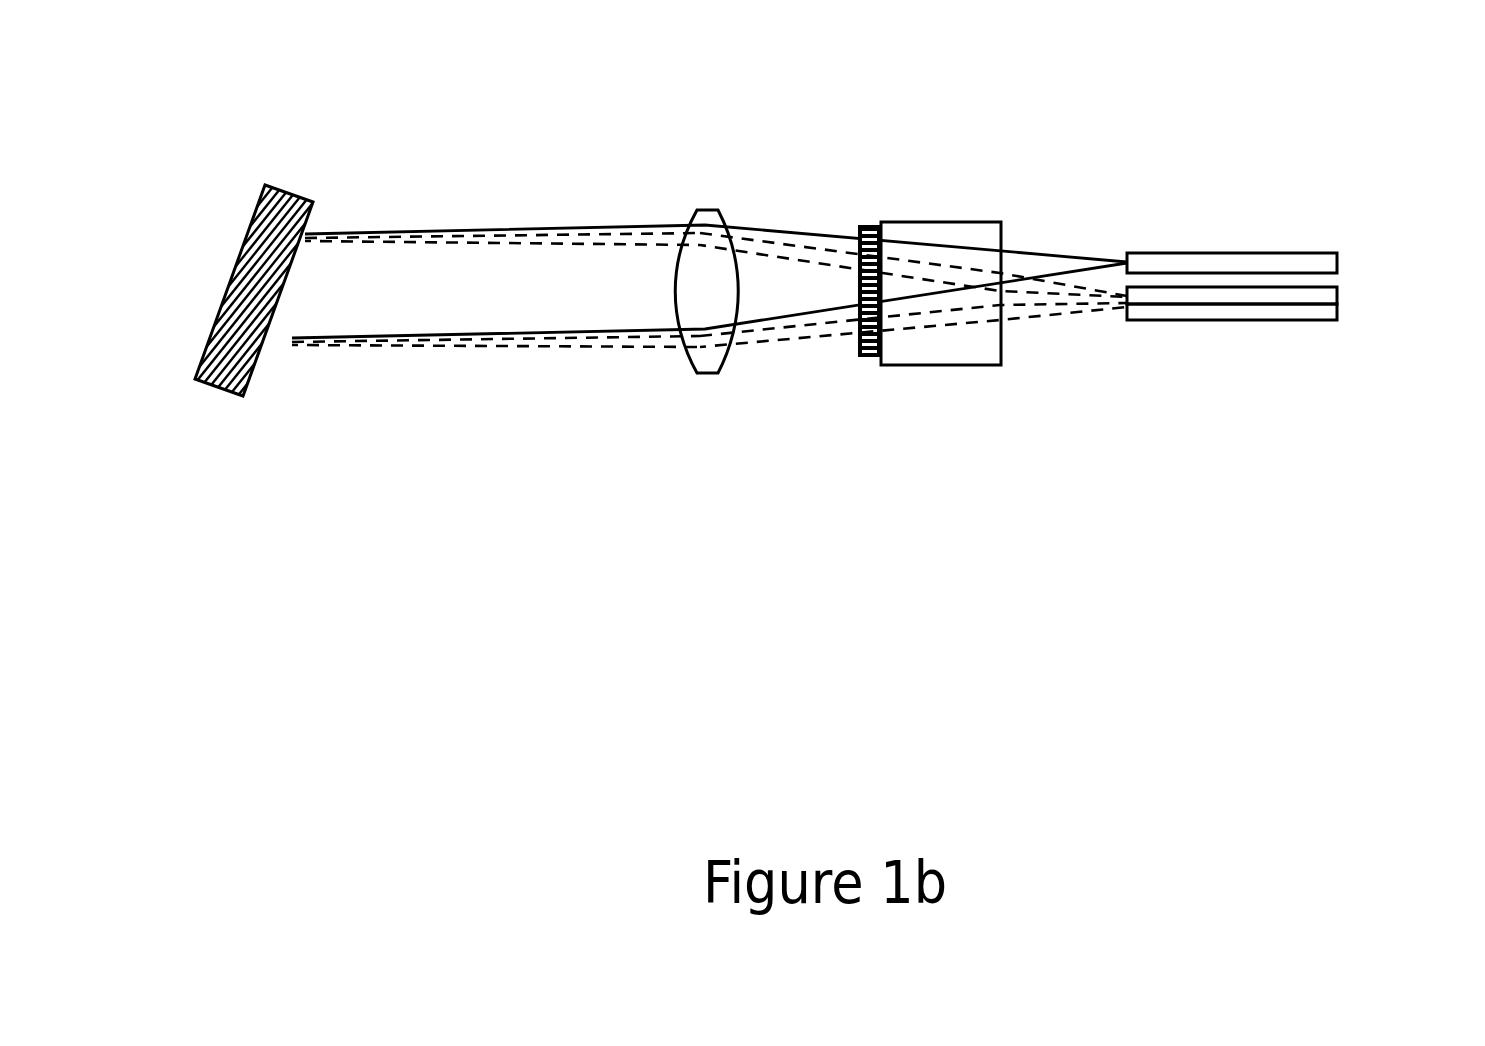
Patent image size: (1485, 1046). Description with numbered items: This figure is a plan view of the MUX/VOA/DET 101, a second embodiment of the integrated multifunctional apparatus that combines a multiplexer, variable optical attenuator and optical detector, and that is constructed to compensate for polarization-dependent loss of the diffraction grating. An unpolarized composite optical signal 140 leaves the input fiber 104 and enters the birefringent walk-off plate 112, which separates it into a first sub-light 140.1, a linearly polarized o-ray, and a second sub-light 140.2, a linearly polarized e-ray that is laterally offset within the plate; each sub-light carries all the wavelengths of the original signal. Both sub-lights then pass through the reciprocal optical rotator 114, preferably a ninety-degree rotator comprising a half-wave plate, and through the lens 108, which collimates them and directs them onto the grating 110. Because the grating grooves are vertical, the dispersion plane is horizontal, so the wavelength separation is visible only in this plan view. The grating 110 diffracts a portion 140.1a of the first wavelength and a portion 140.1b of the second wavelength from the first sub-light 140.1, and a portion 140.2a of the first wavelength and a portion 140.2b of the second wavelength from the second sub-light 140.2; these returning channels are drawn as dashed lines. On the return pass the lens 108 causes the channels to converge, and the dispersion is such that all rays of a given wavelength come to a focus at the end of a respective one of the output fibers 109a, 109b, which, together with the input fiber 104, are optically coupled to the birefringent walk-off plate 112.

The MUX/VOA/DET 101 is at (395, 83).
The grating 110 is at (261, 197).
The lens 108 is at (696, 210).
The reciprocal optical rotator 114 is at (872, 223).
The birefringent walk-off plate 112 is at (952, 220).
The composite optical signal 140 is at (1025, 250).
The first sub-light 140.1 is at (773, 227).
The second sub-light 140.2 is at (552, 206).
The portion of wavelength λ2 separated from the first composite optical signal 140.1b is at (1115, 290).
The portion of wavelength λ2 separated from the second composite optical signal 140.2b is at (975, 218).
The portion of wavelength λ1 separated from the first composite optical signal 140.1a is at (1095, 315).
The portion of wavelength λ1 separated from the second composite optical signal 140.2a is at (946, 389).
The input fiber 104 is at (1338, 255).
The output fiber 109b is at (1337, 290).
The output fiber 109a is at (1337, 312).